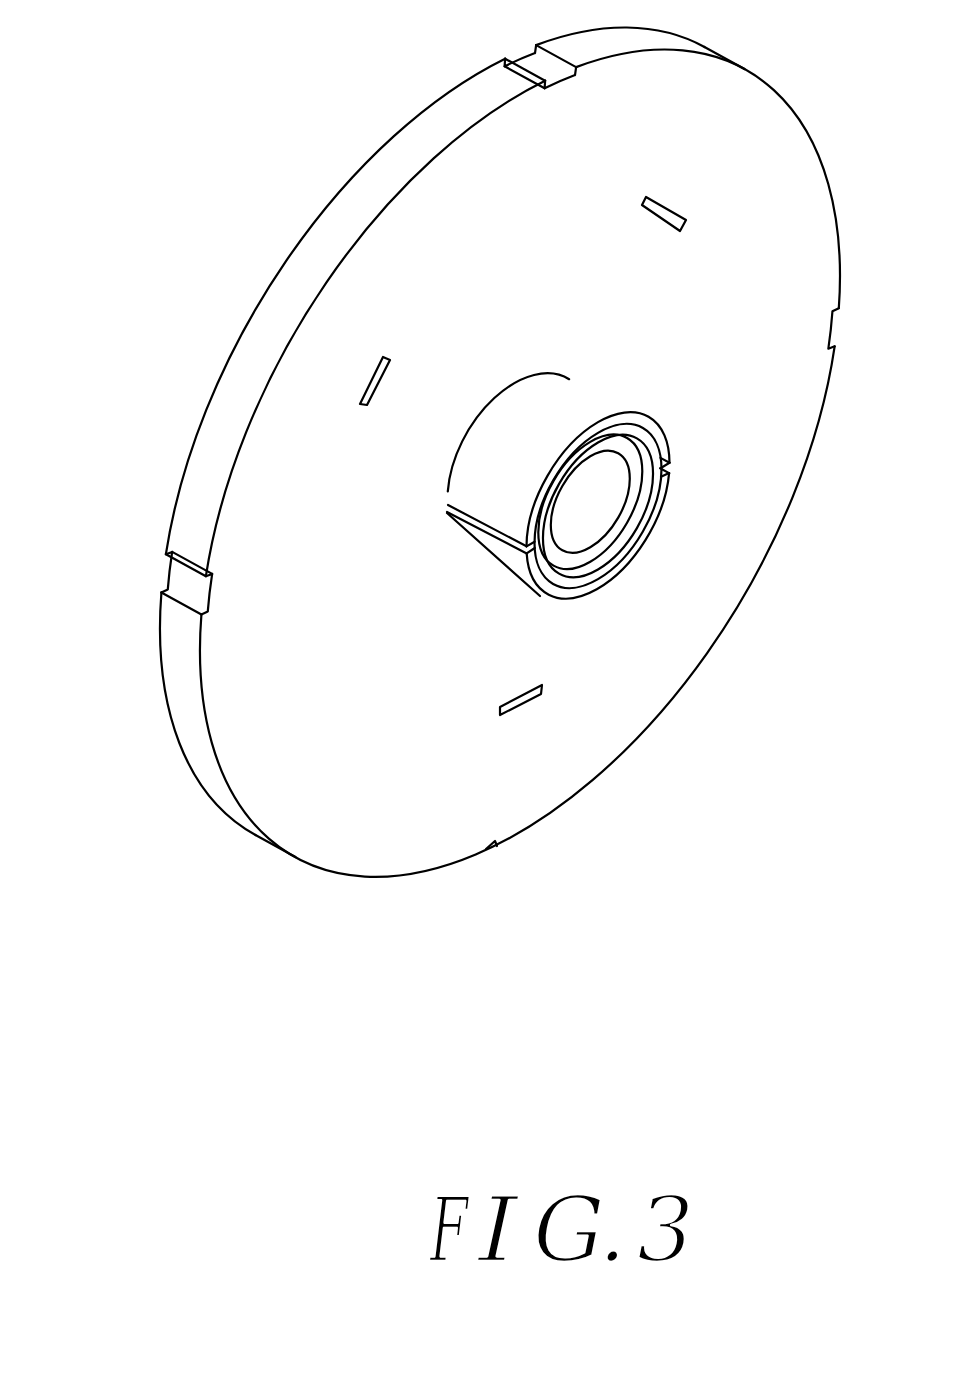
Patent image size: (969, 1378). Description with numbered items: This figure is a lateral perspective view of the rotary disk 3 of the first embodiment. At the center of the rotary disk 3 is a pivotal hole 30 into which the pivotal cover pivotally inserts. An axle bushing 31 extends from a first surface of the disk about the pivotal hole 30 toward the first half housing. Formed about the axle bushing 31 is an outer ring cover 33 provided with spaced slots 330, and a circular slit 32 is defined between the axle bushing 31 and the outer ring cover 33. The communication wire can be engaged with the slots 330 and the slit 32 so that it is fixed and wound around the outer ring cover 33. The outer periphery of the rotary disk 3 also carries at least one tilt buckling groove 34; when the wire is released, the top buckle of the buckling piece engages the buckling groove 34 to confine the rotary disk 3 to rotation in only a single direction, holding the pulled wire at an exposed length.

The rotary disk 3 is at (442, 509).
The pivotal hole 30 is at (588, 523).
The axle bushing 31 is at (606, 541).
The circular slit 32 is at (587, 573).
The outer ring cover 33 is at (548, 593).
The slots 330 is at (669, 463).
The tilt buckling groove 34 is at (182, 580).